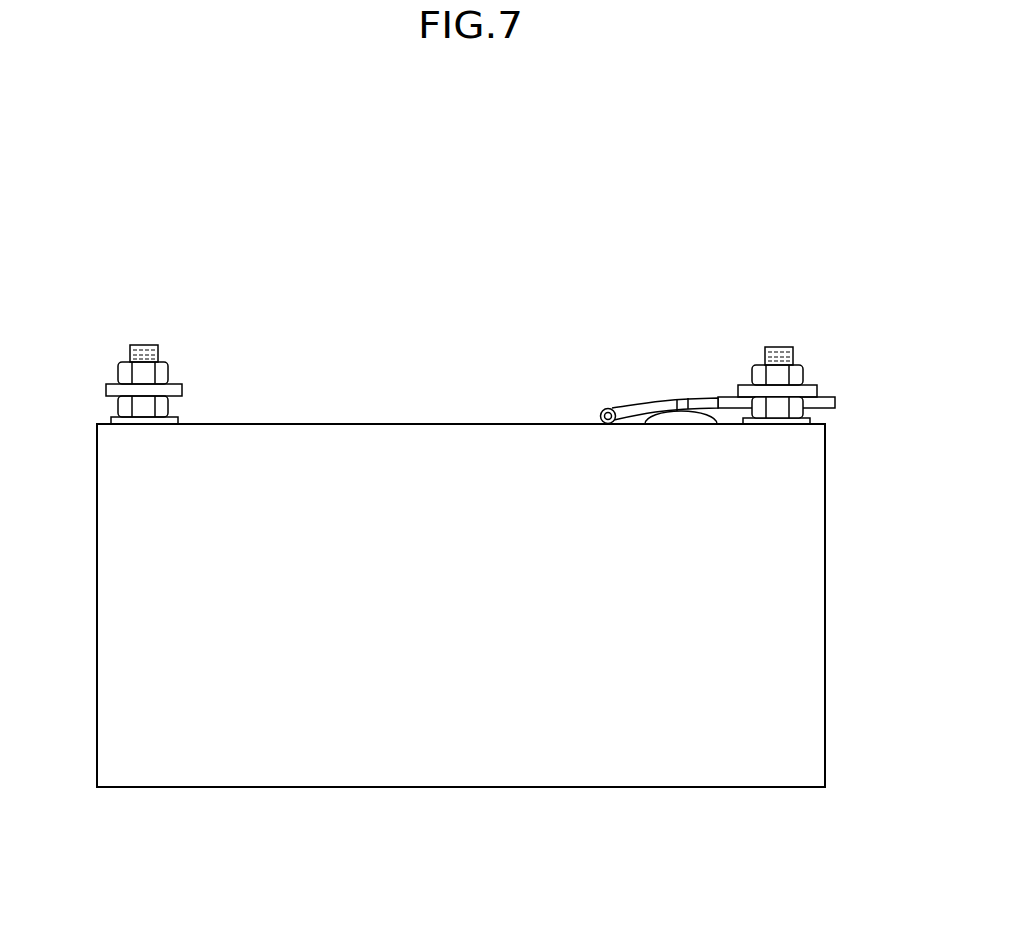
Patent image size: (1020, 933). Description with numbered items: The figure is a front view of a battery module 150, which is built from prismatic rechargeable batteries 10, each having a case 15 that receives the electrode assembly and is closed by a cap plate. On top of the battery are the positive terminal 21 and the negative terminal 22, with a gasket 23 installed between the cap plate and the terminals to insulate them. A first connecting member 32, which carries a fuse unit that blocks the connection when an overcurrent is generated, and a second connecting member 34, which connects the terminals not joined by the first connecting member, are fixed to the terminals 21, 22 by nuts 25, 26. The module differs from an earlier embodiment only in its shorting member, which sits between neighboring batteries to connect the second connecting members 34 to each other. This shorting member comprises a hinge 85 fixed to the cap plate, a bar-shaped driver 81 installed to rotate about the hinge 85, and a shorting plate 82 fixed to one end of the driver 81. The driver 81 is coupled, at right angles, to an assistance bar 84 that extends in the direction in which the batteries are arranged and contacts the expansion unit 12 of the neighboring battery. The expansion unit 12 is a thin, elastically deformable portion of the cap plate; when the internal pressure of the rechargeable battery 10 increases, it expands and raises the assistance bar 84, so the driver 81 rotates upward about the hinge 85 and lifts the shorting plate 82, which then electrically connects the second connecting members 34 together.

The battery module 150 is at (480, 180).
The rechargeable battery 10 is at (389, 803).
The case 15 is at (588, 752).
The expansion unit 12 is at (695, 420).
The positive terminal 21 is at (144, 350).
The negative terminal 22 is at (782, 352).
The gasket 23 is at (113, 420).
The nut 25 is at (120, 405).
The nut 26 is at (120, 368).
The first connecting member 32 is at (173, 384).
The second connecting member 34 is at (813, 390).
The driver 81 is at (633, 405).
The shorting plate 82 is at (835, 402).
The assistance bar 84 is at (677, 399).
The hinge 85 is at (603, 408).